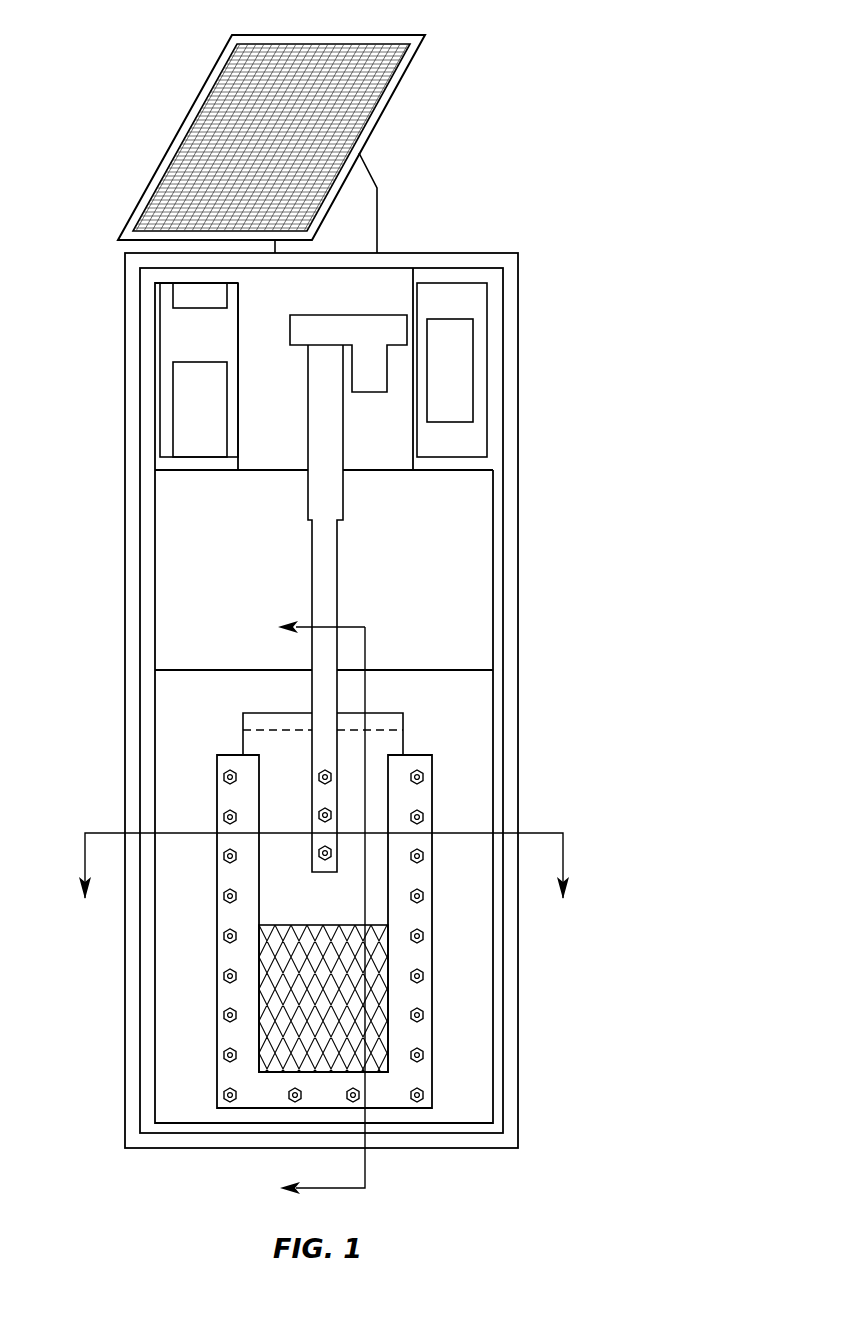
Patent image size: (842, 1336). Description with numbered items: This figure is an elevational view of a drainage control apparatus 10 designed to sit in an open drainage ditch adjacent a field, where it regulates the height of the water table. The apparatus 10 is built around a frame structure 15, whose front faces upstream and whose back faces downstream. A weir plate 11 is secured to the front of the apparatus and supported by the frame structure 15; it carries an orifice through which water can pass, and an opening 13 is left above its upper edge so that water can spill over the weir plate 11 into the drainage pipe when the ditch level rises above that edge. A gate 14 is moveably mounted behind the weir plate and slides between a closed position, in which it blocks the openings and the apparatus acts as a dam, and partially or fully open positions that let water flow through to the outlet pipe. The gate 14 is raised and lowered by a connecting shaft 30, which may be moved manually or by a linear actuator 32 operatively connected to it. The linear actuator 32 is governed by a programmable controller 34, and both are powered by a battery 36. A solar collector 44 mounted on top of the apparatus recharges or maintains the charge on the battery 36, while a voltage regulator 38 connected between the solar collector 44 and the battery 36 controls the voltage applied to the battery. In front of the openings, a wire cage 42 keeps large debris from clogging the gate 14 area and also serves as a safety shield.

The drainage control apparatus 10 is at (585, 57).
The weir plate 11 is at (457, 748).
The opening 13 is at (450, 537).
The gate 14 is at (280, 783).
The frame structure 15 is at (520, 443).
The connecting shaft 30 is at (323, 573).
The linear actuator 32 is at (362, 328).
The programmable controller 34 is at (450, 370).
The battery 36 is at (198, 408).
The voltage regulator 38 is at (190, 292).
The wire cage 42 is at (323, 1005).
The solar collector 44 is at (243, 90).